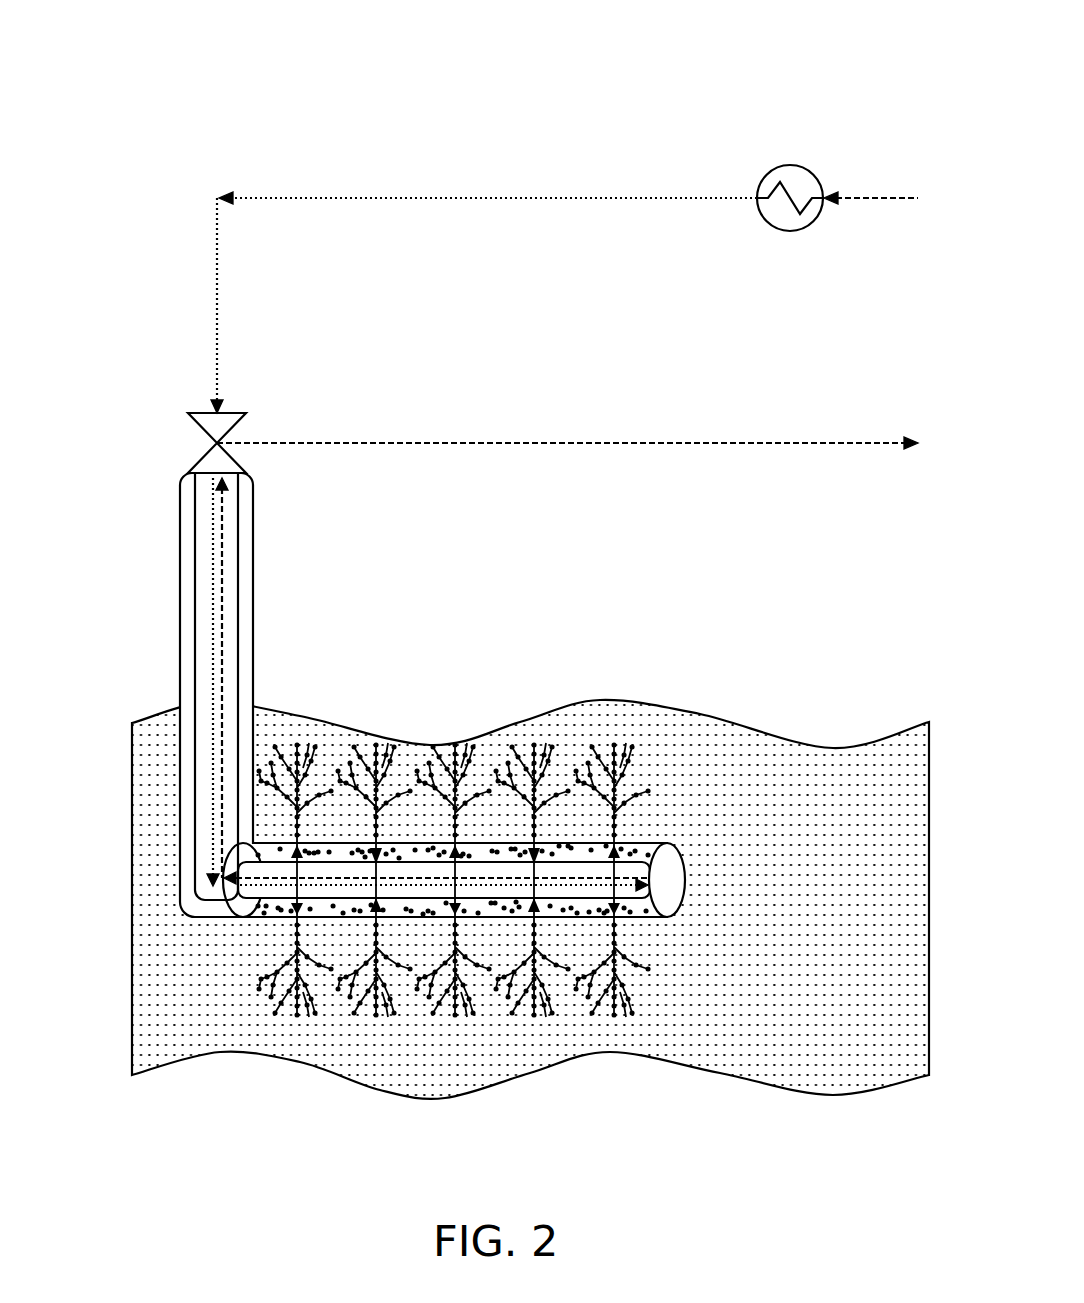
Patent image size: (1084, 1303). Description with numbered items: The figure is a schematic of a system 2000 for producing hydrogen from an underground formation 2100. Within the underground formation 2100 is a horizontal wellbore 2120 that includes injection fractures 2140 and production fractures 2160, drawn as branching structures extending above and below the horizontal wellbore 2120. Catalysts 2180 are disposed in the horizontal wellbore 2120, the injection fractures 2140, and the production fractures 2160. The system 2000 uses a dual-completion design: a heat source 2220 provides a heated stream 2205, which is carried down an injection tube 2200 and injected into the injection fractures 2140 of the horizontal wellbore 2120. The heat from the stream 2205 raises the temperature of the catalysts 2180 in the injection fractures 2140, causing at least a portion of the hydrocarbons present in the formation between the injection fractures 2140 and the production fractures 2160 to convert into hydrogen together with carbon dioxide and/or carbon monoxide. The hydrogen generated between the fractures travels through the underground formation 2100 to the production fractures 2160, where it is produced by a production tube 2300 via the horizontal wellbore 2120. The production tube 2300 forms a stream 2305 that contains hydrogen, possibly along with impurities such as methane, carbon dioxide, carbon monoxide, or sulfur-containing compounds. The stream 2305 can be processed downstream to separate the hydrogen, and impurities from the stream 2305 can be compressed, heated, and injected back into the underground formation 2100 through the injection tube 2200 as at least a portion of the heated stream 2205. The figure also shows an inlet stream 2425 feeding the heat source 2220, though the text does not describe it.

The system 2000 is at (822, 90).
The underground formation 2100 is at (150, 705).
The horizontal wellbore 2120 is at (213, 910).
The injection fractures 2140 is at (297, 750).
The production fractures 2160 is at (392, 765).
The catalysts 2180 is at (616, 843).
The injection tube 2200 is at (212, 570).
The heated stream 2205 is at (497, 196).
The heat source 2220 is at (768, 176).
The production tube 2300 is at (222, 570).
The stream 2305 is at (580, 443).
The inlet fluid stream 2425 is at (862, 196).